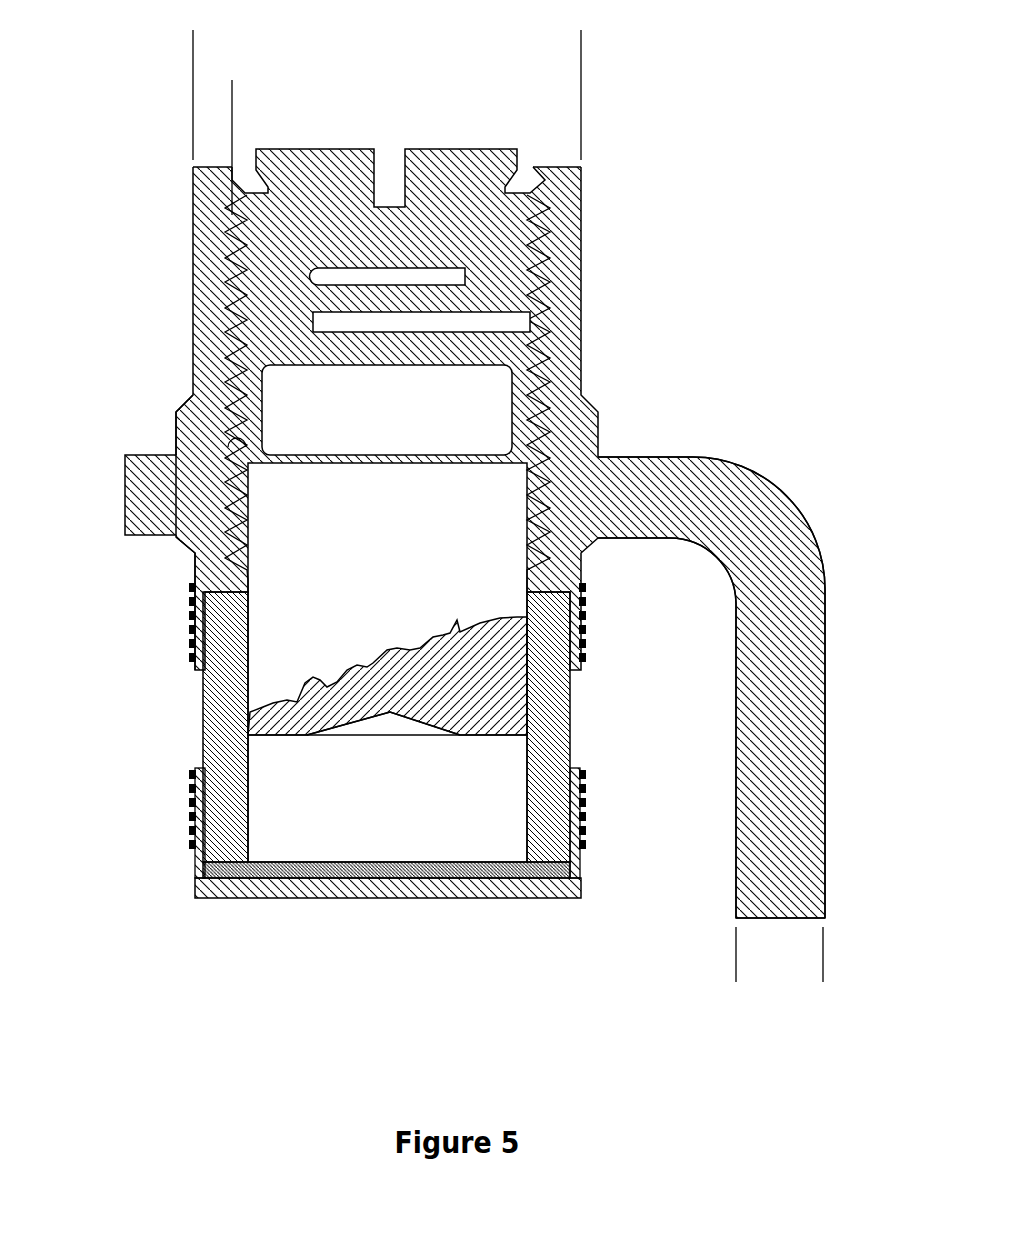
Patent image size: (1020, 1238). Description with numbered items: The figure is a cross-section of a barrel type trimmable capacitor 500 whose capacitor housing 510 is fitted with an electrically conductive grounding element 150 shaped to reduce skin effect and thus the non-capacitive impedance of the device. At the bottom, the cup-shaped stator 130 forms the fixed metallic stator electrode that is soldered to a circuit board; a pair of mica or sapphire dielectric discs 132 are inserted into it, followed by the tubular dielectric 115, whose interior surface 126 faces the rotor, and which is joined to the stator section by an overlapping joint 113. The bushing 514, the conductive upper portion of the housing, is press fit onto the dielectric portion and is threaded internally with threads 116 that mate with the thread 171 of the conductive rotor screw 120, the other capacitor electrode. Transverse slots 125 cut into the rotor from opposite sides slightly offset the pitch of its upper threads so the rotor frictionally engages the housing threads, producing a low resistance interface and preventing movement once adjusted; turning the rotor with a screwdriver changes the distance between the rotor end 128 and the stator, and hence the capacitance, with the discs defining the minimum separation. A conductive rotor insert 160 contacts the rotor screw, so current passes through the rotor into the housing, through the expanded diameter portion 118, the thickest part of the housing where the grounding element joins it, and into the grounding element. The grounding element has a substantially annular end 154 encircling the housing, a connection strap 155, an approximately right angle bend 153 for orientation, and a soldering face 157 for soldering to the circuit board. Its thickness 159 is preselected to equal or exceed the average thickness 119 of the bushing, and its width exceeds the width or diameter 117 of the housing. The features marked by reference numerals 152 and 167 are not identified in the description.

The capacitor 500 is at (685, 238).
The capacitor housing 510 is at (120, 318).
The bushing 514 is at (193, 342).
The thread of the rotor screw 171 is at (583, 183).
The rotor screw 120 is at (465, 150).
The transverse slots 125 is at (342, 322).
The threads 116 is at (260, 435).
The substantially annular end 154 is at (153, 460).
The expanded diameter portion 118 is at (192, 550).
The tubular dielectric 115 is at (230, 697).
The interior surface of the dielectric tubular housing 126 is at (508, 803).
The dielectric discs 132 is at (330, 878).
The stator 130 is at (427, 898).
The overlapping joint 113 is at (572, 618).
The rotor end 128 is at (357, 725).
The support ridge 167 is at (355, 738).
The grounding element 150 is at (828, 530).
The arm top surface 152 is at (598, 488).
The rotor insert 160 is at (480, 505).
The right angle bend 153 is at (778, 490).
The connection strap 155 is at (780, 705).
The soldering face 157 is at (798, 918).
The thickness of the grounding element 159 is at (869, 951).
The width or diameter of the capacitor housing 117 is at (193, 40).
The average thickness of the capacitor housing 119 is at (268, 97).